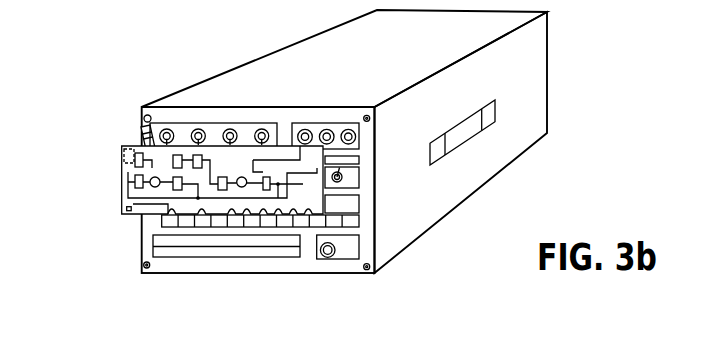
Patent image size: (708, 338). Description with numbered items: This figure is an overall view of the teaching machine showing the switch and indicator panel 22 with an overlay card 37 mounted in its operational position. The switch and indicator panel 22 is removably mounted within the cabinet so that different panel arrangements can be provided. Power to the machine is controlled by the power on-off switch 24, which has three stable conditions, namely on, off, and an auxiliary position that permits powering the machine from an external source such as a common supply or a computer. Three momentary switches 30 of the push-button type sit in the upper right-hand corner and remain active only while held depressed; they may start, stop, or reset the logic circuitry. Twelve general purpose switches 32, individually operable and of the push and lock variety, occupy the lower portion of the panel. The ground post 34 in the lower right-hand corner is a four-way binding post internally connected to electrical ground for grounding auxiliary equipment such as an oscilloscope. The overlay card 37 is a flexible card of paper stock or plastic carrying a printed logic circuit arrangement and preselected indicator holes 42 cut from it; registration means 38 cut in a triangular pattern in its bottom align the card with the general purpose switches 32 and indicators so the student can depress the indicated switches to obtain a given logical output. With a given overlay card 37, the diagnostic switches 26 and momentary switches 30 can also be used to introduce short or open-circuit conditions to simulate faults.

The switch and indicator panel assembly 22 is at (310, 268).
The power on-off switch 24 is at (345, 180).
The diagnostic switches 26 is at (193, 130).
The momentary switches 30 is at (355, 140).
The general purpose switches 32 is at (162, 222).
The ground post 34 is at (331, 253).
The overlay card 37 is at (206, 224).
The registration means 38 is at (248, 213).
The indicator holes 42 is at (202, 238).